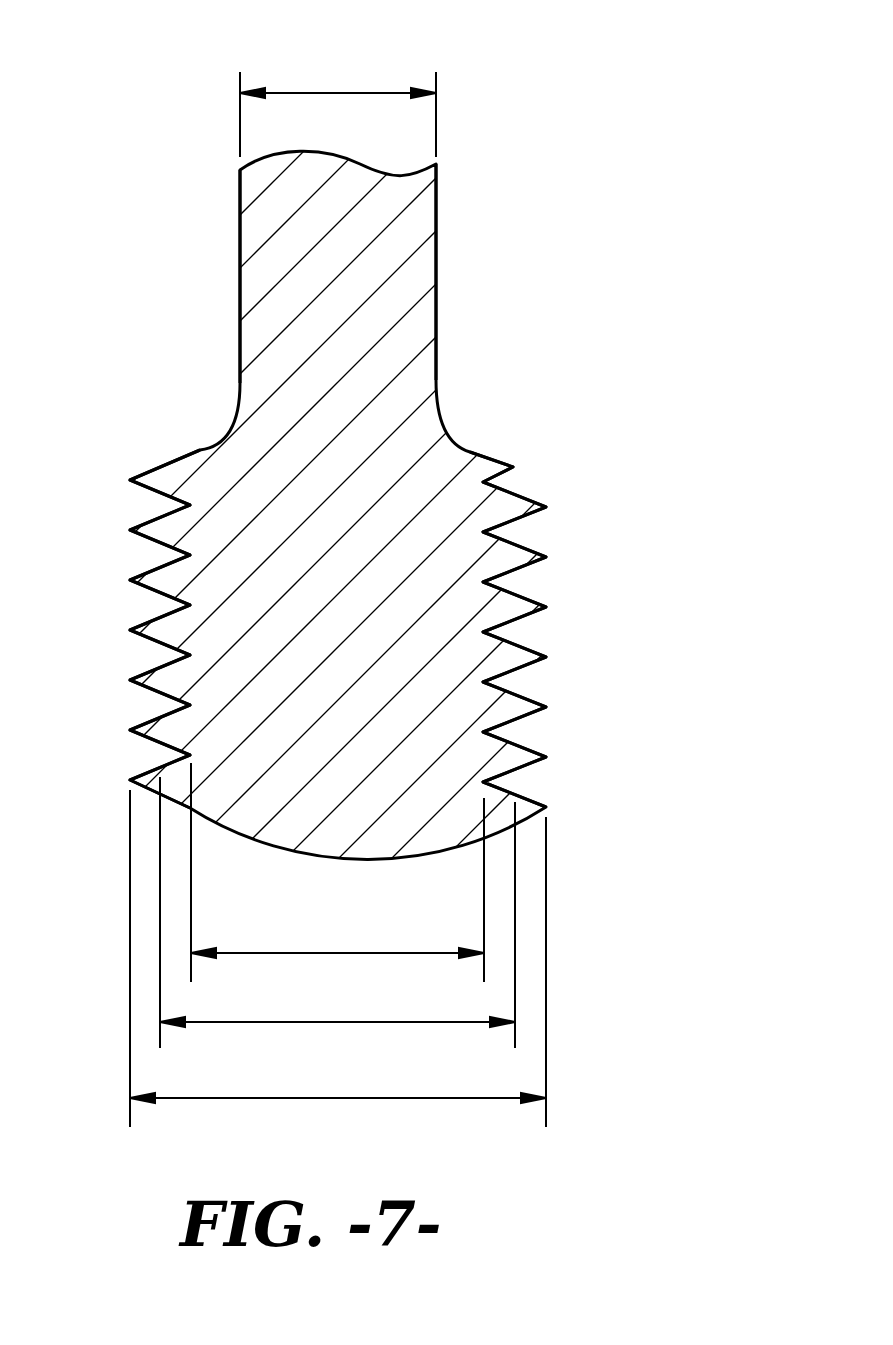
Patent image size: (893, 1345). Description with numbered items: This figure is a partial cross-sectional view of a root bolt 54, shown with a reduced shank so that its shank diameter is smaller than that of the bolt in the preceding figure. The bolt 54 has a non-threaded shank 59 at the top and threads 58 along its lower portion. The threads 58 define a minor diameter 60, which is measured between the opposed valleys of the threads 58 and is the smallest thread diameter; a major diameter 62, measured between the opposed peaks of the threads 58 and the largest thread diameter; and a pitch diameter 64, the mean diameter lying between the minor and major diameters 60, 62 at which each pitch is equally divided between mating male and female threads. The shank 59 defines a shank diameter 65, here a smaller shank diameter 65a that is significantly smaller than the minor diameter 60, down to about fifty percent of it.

The bolt 54 is at (128, 210).
The threads 58 is at (152, 572).
The shank 59 is at (238, 345).
The minor diameter 60 is at (323, 952).
The major diameter 62 is at (267, 1097).
The pitch diameter 64 is at (295, 1020).
The shank diameter 65 is at (368, 92).
The smaller shank diameter 65a is at (340, 90).